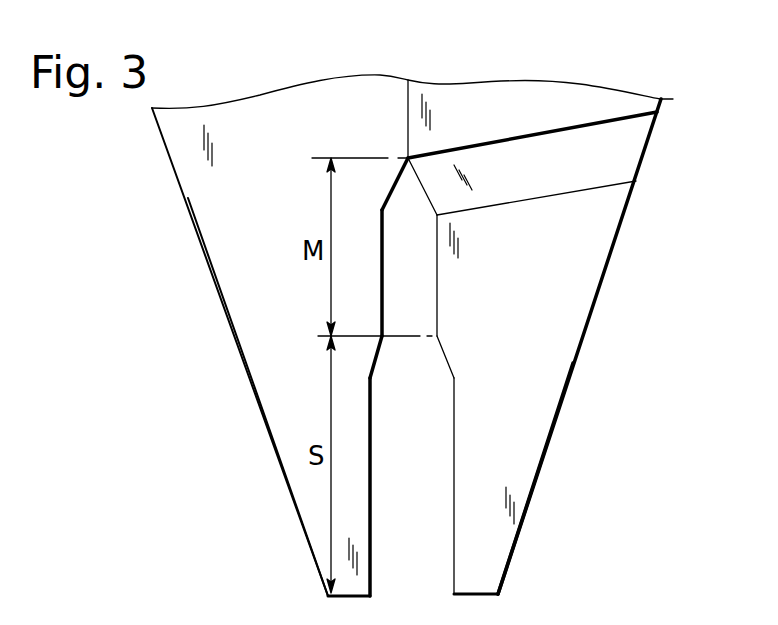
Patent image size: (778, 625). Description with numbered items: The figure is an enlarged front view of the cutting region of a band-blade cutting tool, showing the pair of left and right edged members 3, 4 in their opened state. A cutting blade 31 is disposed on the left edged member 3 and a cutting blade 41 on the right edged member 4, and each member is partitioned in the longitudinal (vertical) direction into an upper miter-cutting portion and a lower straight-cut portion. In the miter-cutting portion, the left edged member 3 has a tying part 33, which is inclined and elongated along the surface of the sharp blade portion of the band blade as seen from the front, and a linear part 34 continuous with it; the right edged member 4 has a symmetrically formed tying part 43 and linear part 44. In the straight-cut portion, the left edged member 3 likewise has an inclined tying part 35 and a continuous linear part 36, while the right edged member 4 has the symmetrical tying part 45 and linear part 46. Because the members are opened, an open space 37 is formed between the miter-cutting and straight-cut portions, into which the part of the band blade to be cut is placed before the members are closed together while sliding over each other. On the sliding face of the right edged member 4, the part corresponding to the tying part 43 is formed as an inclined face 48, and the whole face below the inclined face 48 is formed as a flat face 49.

The left edged member 3 is at (188, 198).
The right edged member 4 is at (620, 89).
The cutting blade 31 is at (250, 370).
The tying part 33 is at (394, 190).
The linear part 34 is at (383, 251).
The tying part 35 is at (378, 352).
The linear part 36 is at (370, 521).
The open space 37 is at (426, 501).
The cutting blade 41 is at (597, 284).
The tying part 43 is at (427, 190).
The linear part 44 is at (440, 282).
The tying part 45 is at (443, 350).
The linear part 46 is at (455, 514).
The inclined face 48 is at (637, 155).
The flat face 49 is at (564, 363).